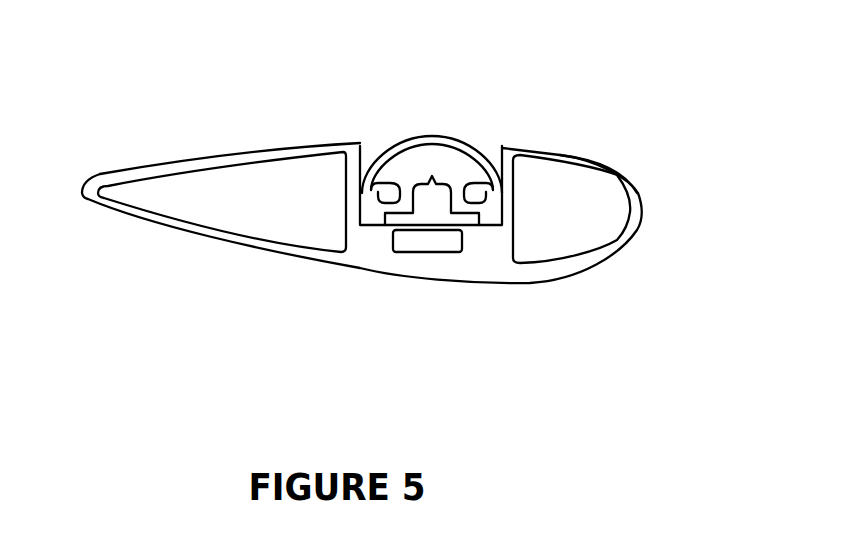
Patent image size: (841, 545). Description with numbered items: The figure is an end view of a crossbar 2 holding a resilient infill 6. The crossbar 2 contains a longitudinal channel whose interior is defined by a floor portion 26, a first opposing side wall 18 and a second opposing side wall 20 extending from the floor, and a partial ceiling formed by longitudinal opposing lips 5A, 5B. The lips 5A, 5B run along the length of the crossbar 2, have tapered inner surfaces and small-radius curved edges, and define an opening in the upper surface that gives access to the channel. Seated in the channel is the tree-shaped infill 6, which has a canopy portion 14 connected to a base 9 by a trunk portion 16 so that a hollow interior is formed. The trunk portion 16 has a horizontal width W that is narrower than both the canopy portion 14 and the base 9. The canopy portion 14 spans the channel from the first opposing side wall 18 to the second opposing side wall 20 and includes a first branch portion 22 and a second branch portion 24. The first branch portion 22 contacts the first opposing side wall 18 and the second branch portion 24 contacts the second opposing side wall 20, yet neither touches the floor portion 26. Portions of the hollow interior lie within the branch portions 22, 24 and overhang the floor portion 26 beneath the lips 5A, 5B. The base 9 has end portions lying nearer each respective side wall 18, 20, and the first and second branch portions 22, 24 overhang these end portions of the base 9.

The crossbar 2 is at (542, 143).
The infill 6 is at (450, 132).
The lip 5A is at (337, 142).
The lip 5B is at (473, 140).
The base 9 is at (431, 225).
The canopy portion 14 is at (423, 133).
The trunk portion 16 is at (405, 193).
The first opposing side wall 18 is at (342, 180).
The second opposing side wall 20 is at (518, 188).
The first branch portion 22 is at (358, 157).
The second branch portion 24 is at (490, 153).
The floor portion 26 is at (388, 227).
The horizontal width W is at (431, 162).